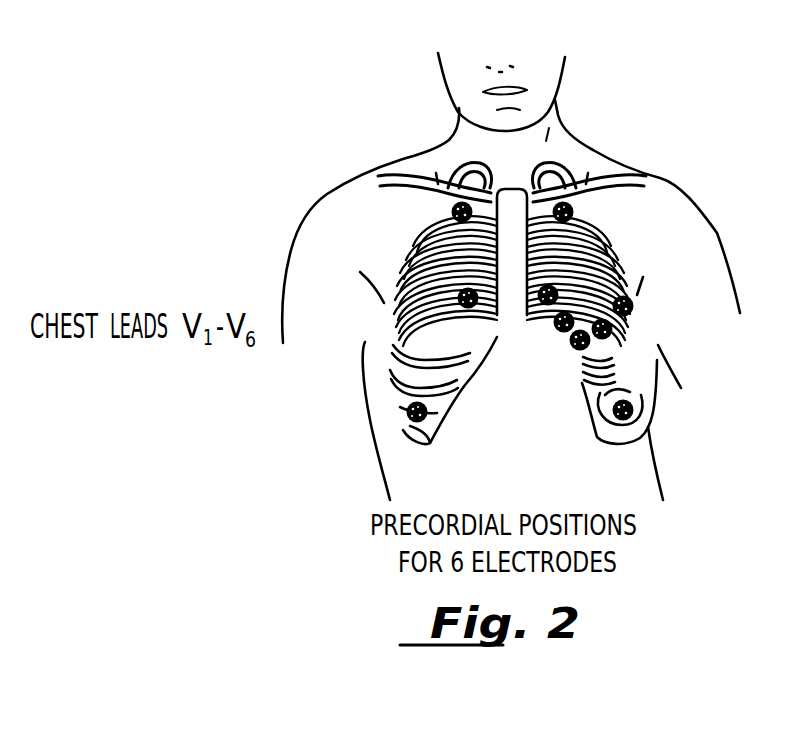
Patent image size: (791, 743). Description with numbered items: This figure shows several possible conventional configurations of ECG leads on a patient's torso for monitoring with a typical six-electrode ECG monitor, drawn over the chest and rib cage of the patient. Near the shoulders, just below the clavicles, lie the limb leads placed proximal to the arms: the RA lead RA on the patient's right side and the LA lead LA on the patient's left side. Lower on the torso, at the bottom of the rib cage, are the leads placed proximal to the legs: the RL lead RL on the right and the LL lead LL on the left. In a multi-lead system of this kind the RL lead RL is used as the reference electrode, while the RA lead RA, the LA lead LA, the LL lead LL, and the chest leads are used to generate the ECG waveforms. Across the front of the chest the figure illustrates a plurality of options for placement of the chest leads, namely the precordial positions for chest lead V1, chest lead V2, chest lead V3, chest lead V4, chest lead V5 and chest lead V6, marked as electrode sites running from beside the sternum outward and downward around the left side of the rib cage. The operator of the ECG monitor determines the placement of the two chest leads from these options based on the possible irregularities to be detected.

The RA lead RA is at (419, 218).
The LA lead LA is at (600, 215).
The chest lead V1 is at (443, 317).
The chest lead V2 is at (550, 272).
The chest lead V3 is at (539, 330).
The chest lead V4 is at (565, 364).
The chest lead V5 is at (625, 351).
The chest lead V6 is at (649, 309).
The RL lead RL is at (447, 438).
The LL lead LL is at (593, 437).